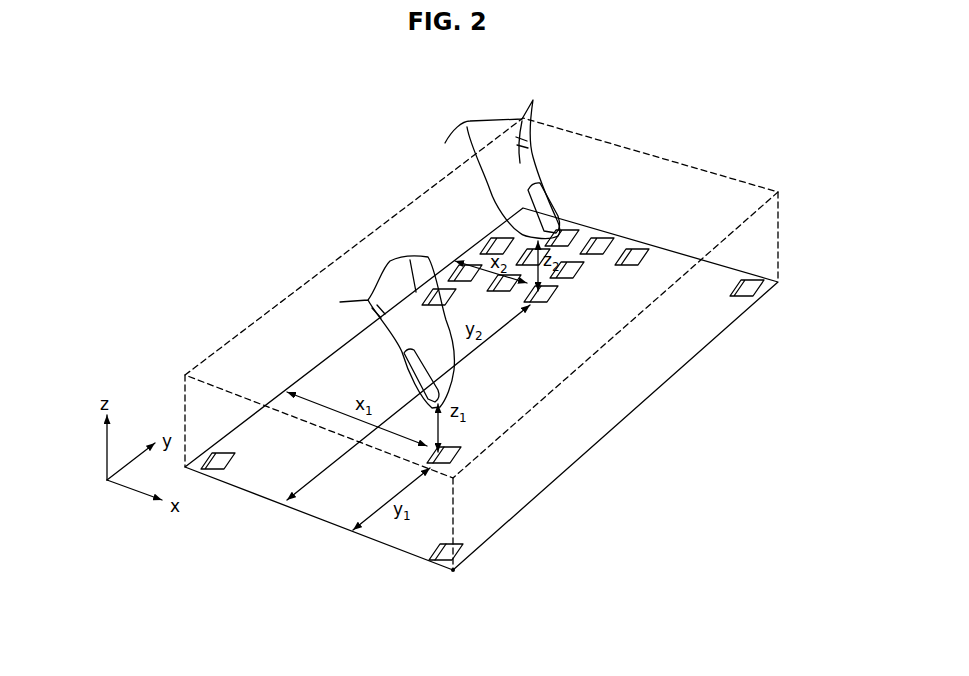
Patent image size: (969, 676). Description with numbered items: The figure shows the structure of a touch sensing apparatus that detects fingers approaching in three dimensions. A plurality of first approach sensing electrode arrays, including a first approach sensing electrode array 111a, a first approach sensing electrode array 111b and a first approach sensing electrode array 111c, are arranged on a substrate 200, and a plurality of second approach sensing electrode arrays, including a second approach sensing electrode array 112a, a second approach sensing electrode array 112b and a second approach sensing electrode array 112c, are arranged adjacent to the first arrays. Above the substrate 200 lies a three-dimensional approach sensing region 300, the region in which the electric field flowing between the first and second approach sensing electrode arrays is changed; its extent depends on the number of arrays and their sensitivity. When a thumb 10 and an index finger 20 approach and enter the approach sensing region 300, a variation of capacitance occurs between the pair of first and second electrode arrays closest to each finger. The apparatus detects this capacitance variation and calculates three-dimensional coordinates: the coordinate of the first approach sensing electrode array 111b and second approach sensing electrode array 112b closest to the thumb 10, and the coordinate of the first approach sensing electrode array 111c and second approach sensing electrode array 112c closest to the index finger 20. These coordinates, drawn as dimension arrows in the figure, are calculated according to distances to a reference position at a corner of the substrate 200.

The thumb 10 is at (390, 300).
The index finger 20 is at (522, 120).
The substrate 200 is at (521, 513).
The 3D approach sensing region 300 is at (638, 148).
The first approach sensing electrode array 111a is at (430, 552).
The second approach sensing electrode array 112a is at (433, 563).
The first approach sensing electrode array 111b is at (452, 450).
The second approach sensing electrode array 112b is at (455, 457).
The first approach sensing electrode array 111c is at (532, 300).
The second approach sensing electrode array 112c is at (552, 293).